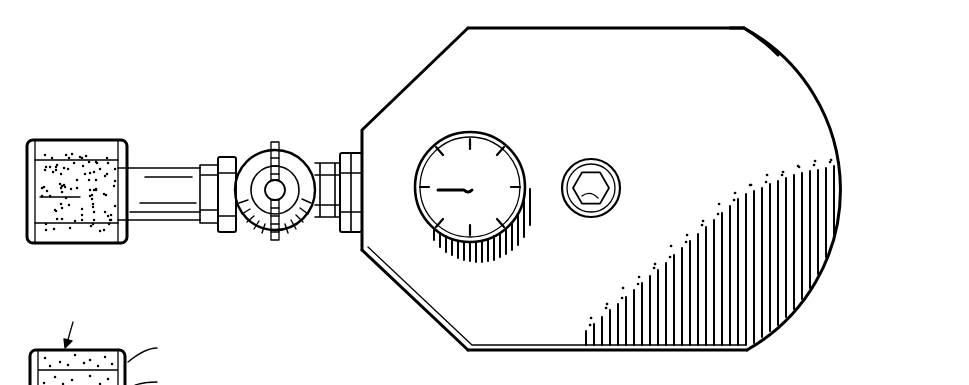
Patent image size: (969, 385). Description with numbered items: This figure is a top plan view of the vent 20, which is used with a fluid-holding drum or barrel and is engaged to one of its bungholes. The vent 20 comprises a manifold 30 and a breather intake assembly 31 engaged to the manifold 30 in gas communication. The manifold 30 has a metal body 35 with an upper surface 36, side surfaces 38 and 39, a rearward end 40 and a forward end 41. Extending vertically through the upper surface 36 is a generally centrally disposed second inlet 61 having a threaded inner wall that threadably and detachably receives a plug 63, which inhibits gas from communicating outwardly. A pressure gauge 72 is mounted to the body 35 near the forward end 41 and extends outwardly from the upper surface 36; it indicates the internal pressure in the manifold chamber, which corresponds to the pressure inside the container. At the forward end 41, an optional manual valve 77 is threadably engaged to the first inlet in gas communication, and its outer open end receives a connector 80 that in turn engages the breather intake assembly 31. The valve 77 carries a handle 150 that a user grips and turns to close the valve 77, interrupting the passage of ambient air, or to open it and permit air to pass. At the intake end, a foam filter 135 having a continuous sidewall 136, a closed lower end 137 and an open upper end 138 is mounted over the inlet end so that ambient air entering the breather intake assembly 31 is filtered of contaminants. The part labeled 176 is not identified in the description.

The vent 20 is at (384, 62).
The manifold 30 is at (584, 30).
The breather intake assembly 31 is at (154, 167).
The body 35 is at (764, 52).
The upper surface 36 is at (672, 168).
The side surface 38 is at (470, 28).
The side surface 39 is at (615, 350).
The rearward end 40 is at (823, 272).
The forward end 41 is at (352, 243).
The second port or inlet 61 is at (616, 171).
The plug 63 is at (605, 206).
The pressure gauge 72 is at (512, 148).
The valve 77 is at (280, 193).
The connector 80 is at (223, 158).
The filter 135 is at (100, 140).
The continuous sidewall 136 is at (100, 242).
The closed lower end 137 is at (30, 215).
The open upper end 138 is at (128, 207).
The handle 150 is at (278, 142).
The coupling nut 176 is at (335, 155).